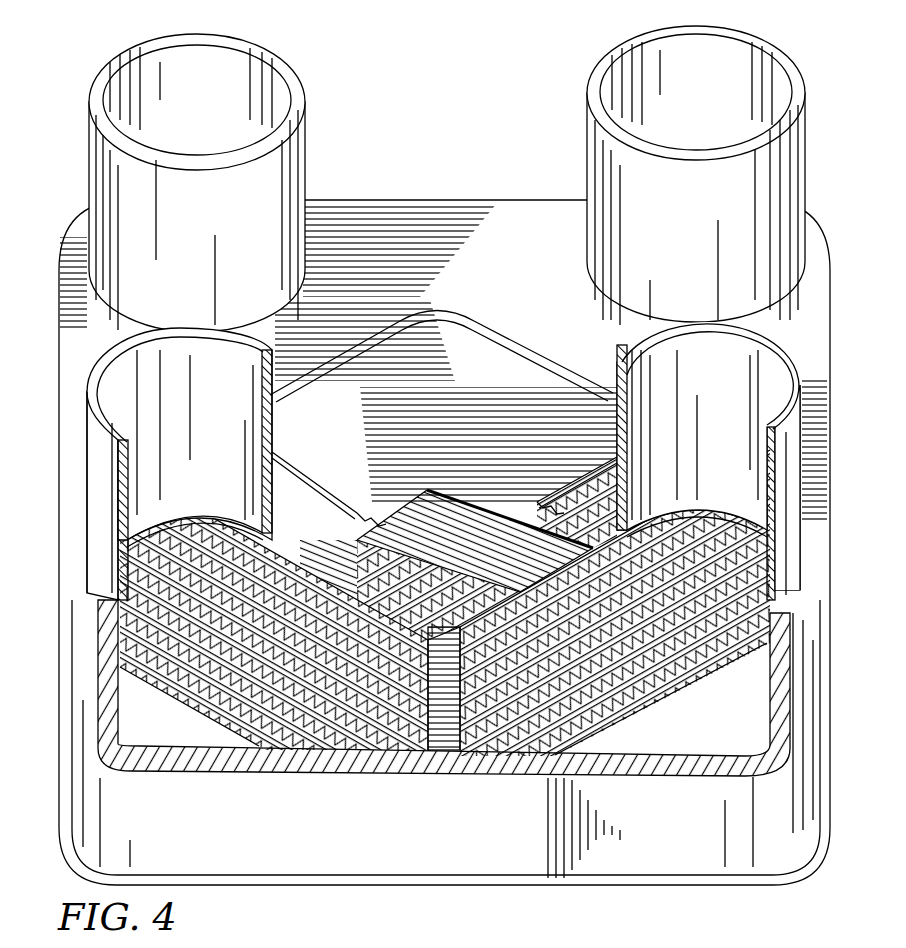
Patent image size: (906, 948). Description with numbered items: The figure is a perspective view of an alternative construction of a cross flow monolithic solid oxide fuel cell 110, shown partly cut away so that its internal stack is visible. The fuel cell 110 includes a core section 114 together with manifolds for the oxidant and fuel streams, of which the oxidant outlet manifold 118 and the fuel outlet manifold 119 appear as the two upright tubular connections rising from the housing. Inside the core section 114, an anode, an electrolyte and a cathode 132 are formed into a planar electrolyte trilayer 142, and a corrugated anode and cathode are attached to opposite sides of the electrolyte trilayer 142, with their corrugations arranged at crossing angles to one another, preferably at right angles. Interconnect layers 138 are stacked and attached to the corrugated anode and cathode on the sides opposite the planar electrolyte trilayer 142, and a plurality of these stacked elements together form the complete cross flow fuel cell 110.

The cross flow monolithic solid oxide fuel cell 110 is at (427, 95).
The core section 114 is at (400, 372).
The oxidant outlet manifold 118 is at (590, 162).
The fuel outlet manifold 119 is at (303, 157).
The cathode 132 is at (487, 500).
The interconnect layers 138 is at (262, 742).
The electrolyte trilayer 142 is at (284, 745).